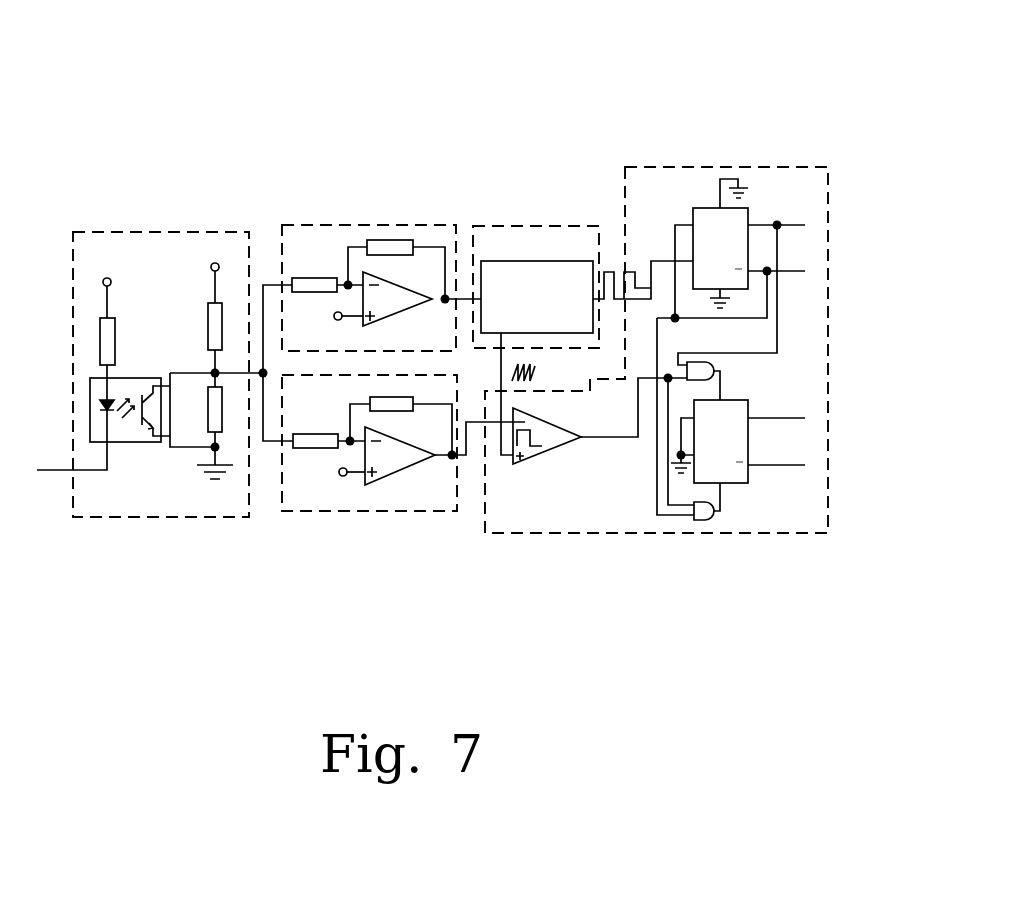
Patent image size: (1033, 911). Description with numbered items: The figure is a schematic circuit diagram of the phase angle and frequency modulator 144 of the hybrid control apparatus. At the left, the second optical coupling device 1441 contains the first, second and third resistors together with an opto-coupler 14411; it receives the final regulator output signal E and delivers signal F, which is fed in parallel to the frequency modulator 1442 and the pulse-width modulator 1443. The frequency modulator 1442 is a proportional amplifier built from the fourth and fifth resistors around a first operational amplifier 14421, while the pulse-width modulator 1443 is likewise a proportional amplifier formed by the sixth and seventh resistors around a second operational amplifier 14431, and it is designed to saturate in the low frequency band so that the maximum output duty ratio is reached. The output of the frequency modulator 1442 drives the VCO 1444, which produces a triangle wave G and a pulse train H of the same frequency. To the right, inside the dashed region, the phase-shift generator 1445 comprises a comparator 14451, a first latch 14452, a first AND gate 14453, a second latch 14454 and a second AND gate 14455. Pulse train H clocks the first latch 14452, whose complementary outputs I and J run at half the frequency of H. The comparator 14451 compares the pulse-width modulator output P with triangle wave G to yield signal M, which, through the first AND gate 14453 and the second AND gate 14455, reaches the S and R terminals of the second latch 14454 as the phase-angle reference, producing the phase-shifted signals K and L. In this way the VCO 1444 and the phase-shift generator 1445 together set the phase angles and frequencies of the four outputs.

The phase angle and frequency modulator 144 is at (708, 32).
The second optical coupling device 1441 is at (157, 230).
The opto-coupler 14411 is at (137, 435).
The frequency modulator 1442 is at (412, 227).
The first operational amplifier 14421 is at (404, 300).
The pulse-width modulator 1443 is at (325, 512).
The second operational amplifier 14431 is at (405, 457).
The VCO 1444 is at (572, 226).
The phase-shift generator 1445 is at (828, 362).
The comparator 14451 is at (552, 440).
The first latch 14452 is at (740, 212).
The first AND gate 14453 is at (694, 362).
The second latch 14454 is at (735, 408).
The second AND gate 14455 is at (704, 522).